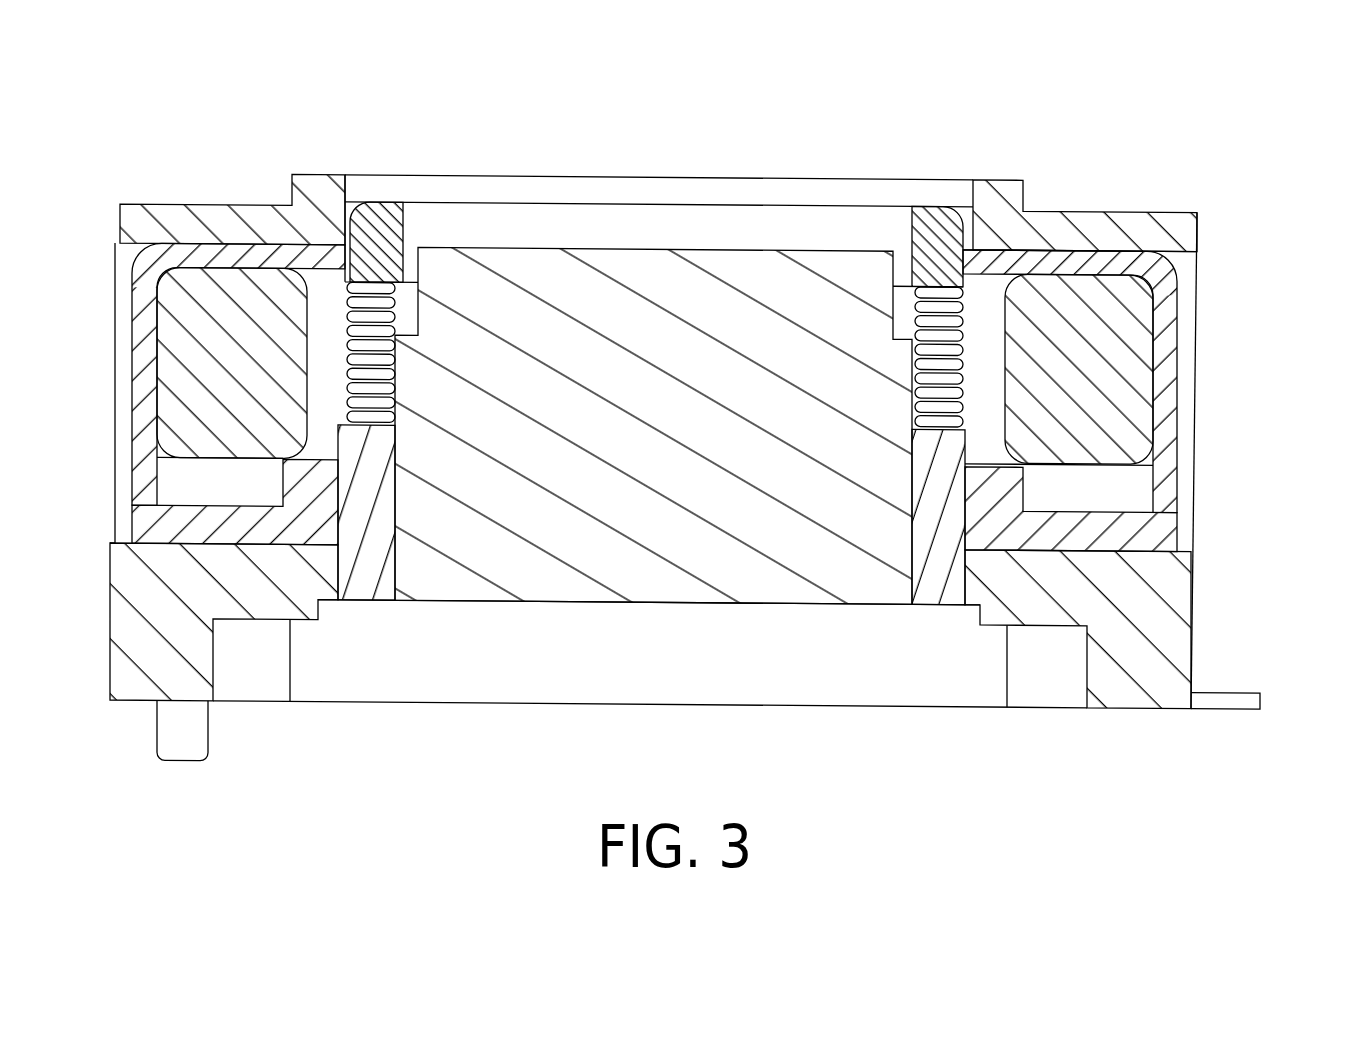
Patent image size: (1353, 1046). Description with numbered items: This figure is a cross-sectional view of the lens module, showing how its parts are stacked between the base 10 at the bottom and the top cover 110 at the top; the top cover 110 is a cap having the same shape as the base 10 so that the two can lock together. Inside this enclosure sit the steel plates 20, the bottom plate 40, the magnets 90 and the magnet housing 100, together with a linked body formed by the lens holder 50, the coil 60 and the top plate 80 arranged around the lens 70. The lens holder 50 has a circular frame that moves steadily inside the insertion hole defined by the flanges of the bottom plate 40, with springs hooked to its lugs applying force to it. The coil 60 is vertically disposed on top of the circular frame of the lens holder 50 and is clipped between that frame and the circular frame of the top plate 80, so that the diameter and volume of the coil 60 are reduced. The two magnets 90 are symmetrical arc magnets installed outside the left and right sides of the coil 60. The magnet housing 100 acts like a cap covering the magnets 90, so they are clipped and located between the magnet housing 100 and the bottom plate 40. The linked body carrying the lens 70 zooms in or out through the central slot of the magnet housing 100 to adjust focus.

The base 10 is at (1137, 667).
The steel plate 20 is at (1233, 702).
The bottom plate 40 is at (1142, 543).
The lens holder 50 is at (940, 542).
The coil 60 is at (962, 314).
The lens 70 is at (580, 358).
The top plate 80 is at (937, 242).
The magnet 90 is at (1090, 405).
The magnet housing 100 is at (1165, 353).
The top cover 110 is at (1097, 233).